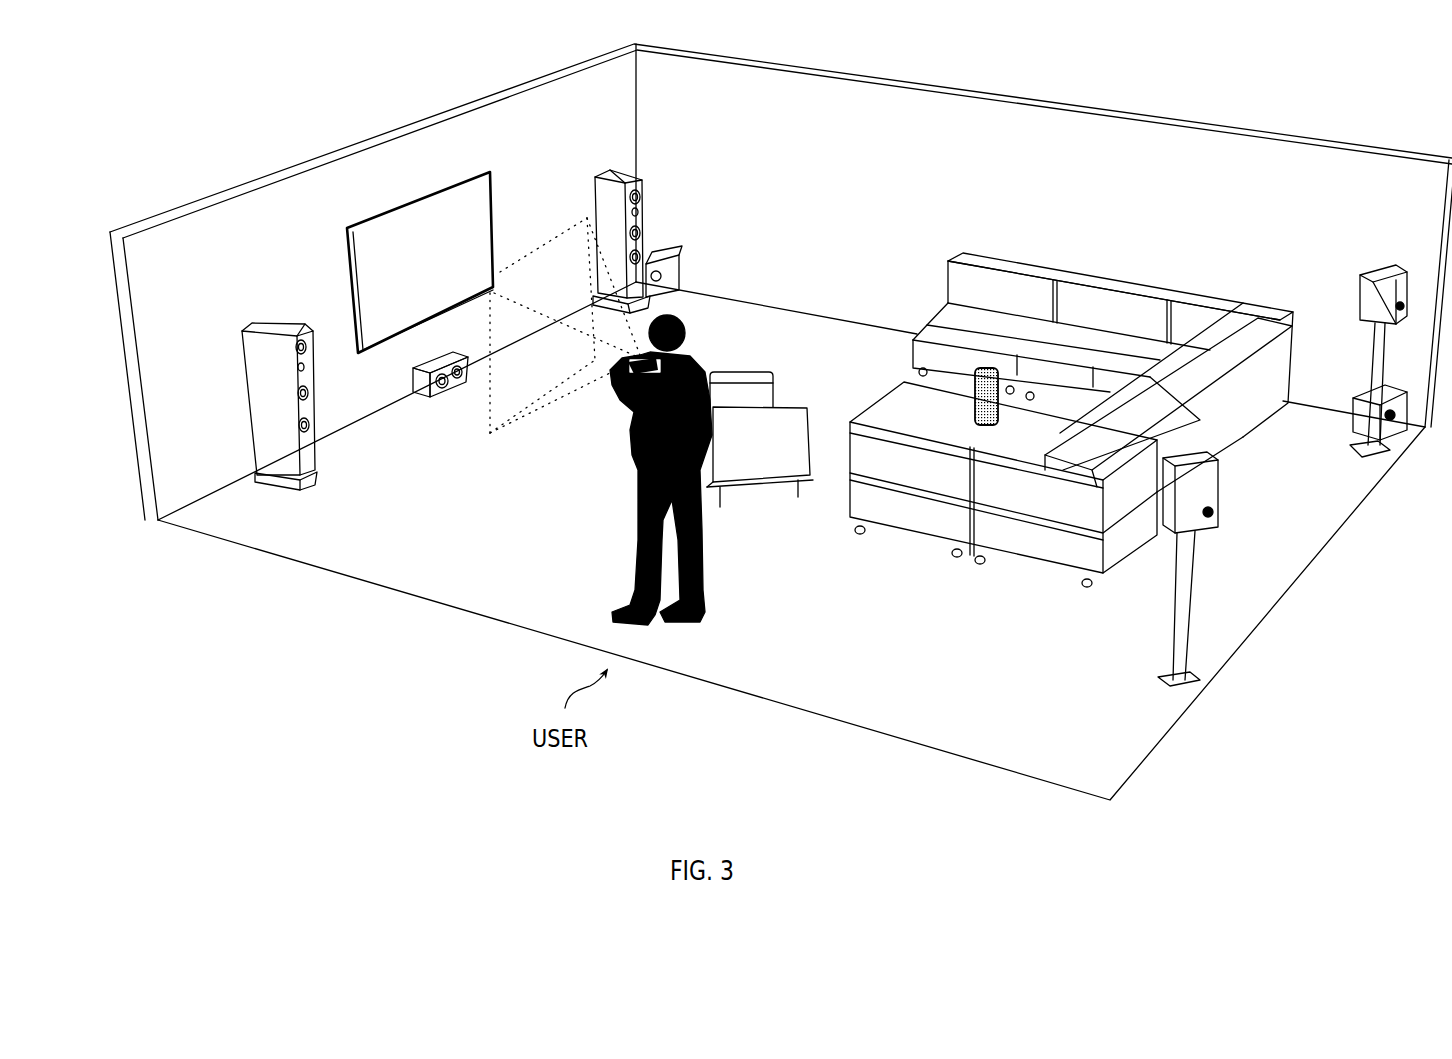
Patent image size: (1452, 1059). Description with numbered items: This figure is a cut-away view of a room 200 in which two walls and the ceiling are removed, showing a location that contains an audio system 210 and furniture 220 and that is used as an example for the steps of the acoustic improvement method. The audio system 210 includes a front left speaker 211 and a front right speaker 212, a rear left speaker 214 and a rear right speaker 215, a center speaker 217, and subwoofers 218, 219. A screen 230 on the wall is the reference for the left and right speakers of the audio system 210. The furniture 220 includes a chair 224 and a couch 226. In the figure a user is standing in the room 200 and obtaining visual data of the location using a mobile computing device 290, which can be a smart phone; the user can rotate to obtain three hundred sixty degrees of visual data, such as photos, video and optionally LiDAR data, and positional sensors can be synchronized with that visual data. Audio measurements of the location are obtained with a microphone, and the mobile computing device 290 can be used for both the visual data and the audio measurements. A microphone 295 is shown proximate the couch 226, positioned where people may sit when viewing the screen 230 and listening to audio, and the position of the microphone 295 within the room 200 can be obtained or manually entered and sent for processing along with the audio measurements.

The room 200 is at (984, 703).
The audio system 210 is at (242, 619).
The front left speaker 211 is at (298, 488).
The front right speaker 212 is at (604, 172).
The rear left speaker 214 is at (1210, 530).
The rear right speaker 215 is at (1370, 273).
The center speaker 217 is at (440, 393).
The subwoofer 218 is at (677, 280).
The subwoofer 219 is at (1347, 413).
The furniture 220 is at (815, 607).
The chair 224 is at (748, 483).
The couch 226 is at (948, 550).
The screen 230 is at (435, 272).
The mobile computing device 290 is at (617, 397).
The microphone 295 is at (972, 390).